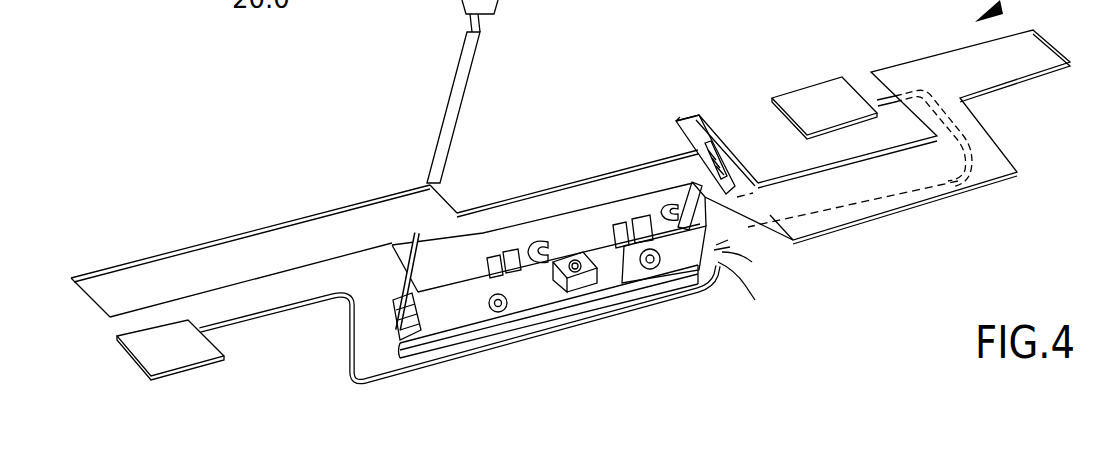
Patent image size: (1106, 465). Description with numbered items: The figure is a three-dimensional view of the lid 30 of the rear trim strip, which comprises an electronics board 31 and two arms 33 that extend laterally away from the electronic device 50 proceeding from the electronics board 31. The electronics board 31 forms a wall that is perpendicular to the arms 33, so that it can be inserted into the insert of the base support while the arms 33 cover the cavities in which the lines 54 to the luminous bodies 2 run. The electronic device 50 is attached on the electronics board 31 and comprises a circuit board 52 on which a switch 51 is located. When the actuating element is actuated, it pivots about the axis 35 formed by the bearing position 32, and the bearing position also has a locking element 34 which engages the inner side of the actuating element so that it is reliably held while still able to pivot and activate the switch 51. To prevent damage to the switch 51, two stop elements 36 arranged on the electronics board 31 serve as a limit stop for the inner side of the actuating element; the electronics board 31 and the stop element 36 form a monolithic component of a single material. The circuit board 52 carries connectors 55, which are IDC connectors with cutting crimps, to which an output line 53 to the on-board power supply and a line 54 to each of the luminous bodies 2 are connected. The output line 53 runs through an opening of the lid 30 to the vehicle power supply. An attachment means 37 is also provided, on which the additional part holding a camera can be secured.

The luminous body 2 is at (812, 108).
The lid 30 is at (411, 16).
The electronics board 31 is at (478, 273).
The bearing position 32 is at (552, 247).
The arm 33 is at (244, 245).
The locking element 34 is at (637, 235).
The axis 35 is at (585, 237).
The stop element 36 is at (498, 312).
The attachment means 37 is at (727, 160).
The electronic device 50 is at (735, 250).
The switch 51 is at (575, 290).
The circuit board 52 is at (722, 245).
The output line 53 is at (447, 124).
The line 54 is at (962, 140).
The connector 55 is at (393, 340).